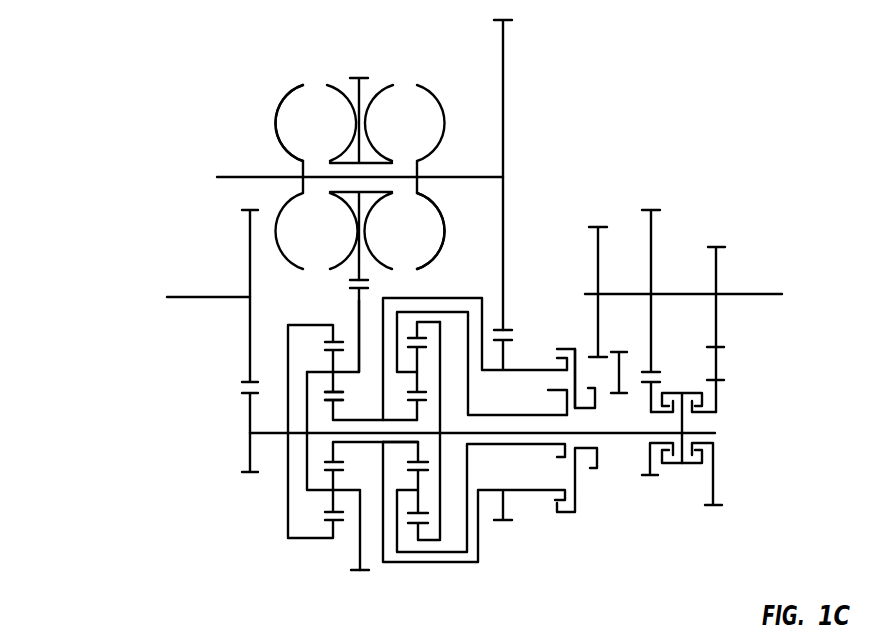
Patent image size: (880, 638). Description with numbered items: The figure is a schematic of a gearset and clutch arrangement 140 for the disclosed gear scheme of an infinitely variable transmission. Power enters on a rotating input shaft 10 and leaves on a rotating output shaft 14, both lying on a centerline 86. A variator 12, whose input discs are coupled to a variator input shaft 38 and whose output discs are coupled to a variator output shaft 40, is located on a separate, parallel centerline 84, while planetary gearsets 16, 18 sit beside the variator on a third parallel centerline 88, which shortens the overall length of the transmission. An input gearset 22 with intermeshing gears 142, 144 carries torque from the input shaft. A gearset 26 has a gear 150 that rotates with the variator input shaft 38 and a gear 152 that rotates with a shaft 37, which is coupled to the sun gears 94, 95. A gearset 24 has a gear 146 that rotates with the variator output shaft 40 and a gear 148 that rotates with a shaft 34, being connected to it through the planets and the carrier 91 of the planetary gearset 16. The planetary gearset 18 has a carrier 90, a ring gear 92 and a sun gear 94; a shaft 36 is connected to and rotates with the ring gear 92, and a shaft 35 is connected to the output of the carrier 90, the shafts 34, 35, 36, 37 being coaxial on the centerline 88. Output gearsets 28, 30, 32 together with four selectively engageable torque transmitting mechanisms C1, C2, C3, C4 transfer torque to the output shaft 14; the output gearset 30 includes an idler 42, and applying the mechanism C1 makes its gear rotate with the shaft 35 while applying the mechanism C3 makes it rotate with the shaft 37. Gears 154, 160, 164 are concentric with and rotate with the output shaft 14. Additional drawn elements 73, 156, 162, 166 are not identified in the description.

The gearset and clutch arrangement 140 is at (90, 115).
The variator 12 is at (410, 64).
The variator input shaft 38 is at (263, 176).
The variator output shaft 40 is at (383, 186).
The centerline 84 is at (196, 172).
The gear 150 is at (503, 228).
The shaft 37 is at (541, 368).
The gear 146 is at (362, 268).
The gear 148 is at (358, 333).
The input shaft 10 is at (227, 297).
The gear 142 is at (248, 338).
The gear 144 is at (249, 456).
The input gearset 22 is at (249, 490).
The centerline 86 is at (118, 306).
The centerline 88 is at (205, 440).
The shaft 34 is at (278, 431).
The housing member 73 is at (317, 323).
The planetary gearset 16 is at (329, 560).
The carrier 91 is at (316, 371).
The gearset 24 is at (362, 590).
The sun gear 95 is at (336, 410).
The shaft 35 is at (519, 413).
The sun gear 94 is at (418, 410).
The ring gear 92 is at (441, 390).
The carrier 90 is at (400, 489).
The planetary gearset 18 is at (432, 580).
The gear 152 is at (504, 500).
The gearset 26 is at (507, 540).
The torque transmitting mechanism C3 is at (574, 363).
The torque transmitting mechanism C1 is at (550, 399).
The drum 156 is at (596, 392).
The output gearset 30 is at (597, 485).
The gear 154 is at (598, 268).
The idler 42 is at (622, 342).
The output shaft 14 is at (782, 294).
The gear 160 is at (651, 258).
The gear 164 is at (717, 276).
The brake 166 is at (725, 382).
The torque transmitting mechanism C2 is at (676, 413).
The torque transmitting mechanism C4 is at (704, 388).
The shaft 36 is at (612, 434).
The shaft 162 is at (648, 470).
The output gearset 28 is at (655, 492).
The output gearset 32 is at (728, 520).